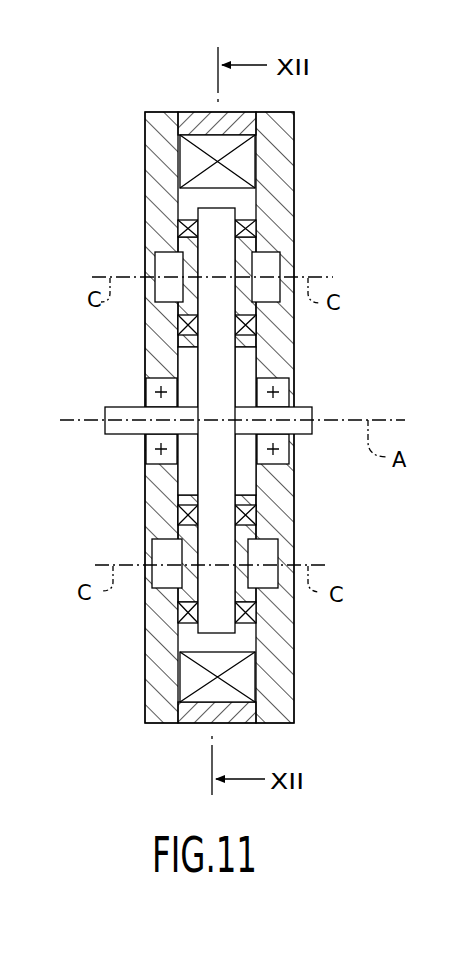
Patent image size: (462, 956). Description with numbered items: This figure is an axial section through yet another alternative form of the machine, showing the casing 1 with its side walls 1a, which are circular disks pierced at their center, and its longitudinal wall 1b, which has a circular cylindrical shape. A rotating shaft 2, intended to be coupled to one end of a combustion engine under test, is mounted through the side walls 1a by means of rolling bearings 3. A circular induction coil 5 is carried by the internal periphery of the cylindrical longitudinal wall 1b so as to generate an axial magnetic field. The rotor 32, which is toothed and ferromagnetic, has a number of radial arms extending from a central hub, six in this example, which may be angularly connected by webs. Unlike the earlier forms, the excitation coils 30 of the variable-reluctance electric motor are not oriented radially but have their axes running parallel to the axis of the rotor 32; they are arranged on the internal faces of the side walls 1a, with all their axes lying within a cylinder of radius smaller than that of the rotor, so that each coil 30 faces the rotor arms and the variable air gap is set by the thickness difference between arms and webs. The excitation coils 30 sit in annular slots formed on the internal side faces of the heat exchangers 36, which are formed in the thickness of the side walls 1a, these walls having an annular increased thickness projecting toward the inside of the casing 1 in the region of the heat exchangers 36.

The casing 1 is at (133, 116).
The side walls 1a is at (152, 165).
The longitudinal wall 1b is at (202, 126).
The rotating shaft 2 is at (298, 411).
The rolling bearings 3 is at (153, 456).
The circular induction coil 5 is at (185, 678).
The excitation coils 30 is at (250, 228).
The rotor 32 is at (216, 378).
The heat exchangers 36 is at (170, 265).